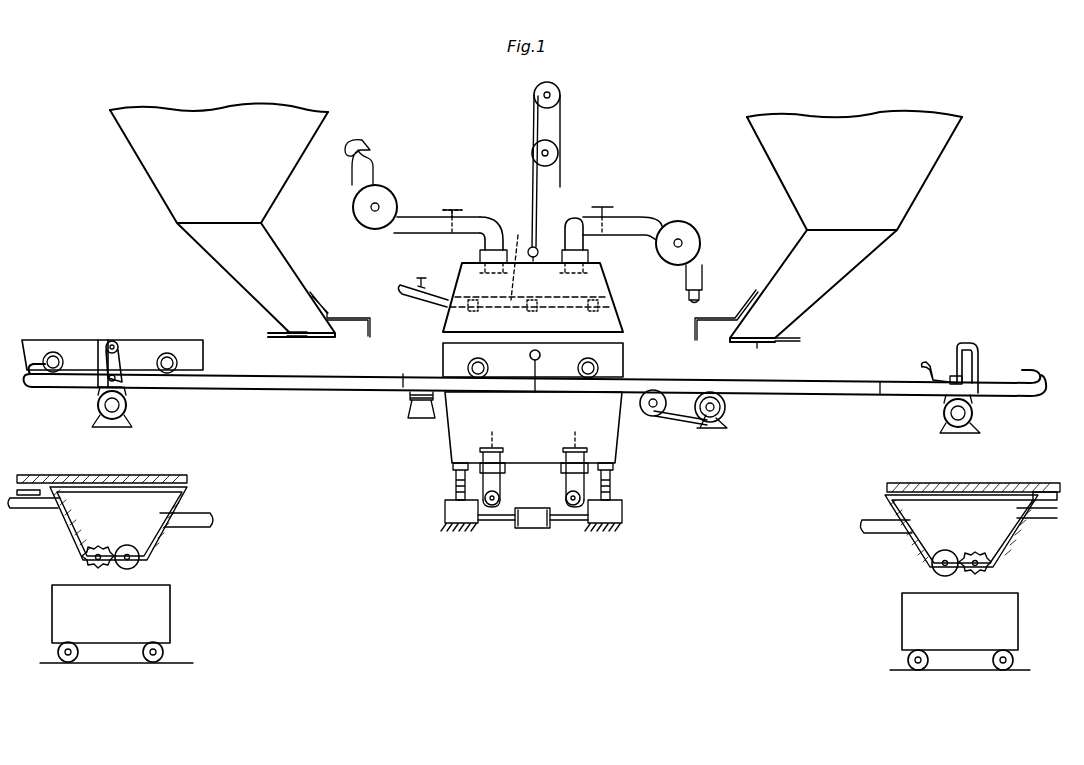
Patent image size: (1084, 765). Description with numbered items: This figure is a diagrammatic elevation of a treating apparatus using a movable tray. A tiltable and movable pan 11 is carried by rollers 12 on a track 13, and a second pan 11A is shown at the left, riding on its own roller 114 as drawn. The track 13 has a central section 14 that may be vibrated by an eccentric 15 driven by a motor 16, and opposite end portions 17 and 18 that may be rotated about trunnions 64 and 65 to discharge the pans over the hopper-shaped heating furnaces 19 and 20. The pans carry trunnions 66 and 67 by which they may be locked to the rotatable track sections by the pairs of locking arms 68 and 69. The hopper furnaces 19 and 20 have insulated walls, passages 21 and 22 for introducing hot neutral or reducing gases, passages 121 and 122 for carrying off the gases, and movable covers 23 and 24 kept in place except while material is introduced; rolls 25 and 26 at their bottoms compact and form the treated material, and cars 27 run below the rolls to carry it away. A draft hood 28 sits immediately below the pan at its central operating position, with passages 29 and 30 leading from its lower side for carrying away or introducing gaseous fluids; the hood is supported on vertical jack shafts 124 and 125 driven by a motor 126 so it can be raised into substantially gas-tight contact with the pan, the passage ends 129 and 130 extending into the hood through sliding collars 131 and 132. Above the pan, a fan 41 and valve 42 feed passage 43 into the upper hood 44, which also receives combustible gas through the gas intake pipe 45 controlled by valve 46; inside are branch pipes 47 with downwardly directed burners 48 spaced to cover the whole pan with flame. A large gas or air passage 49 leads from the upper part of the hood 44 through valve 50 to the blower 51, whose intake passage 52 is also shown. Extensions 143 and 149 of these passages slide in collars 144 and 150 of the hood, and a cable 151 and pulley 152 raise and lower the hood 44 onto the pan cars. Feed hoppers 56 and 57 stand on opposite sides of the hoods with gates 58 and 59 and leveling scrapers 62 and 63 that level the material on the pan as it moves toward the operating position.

The tiltable and movable pan 11 is at (624, 351).
The second pan 11A is at (117, 340).
The rollers 12 is at (466, 365).
The track 13 is at (342, 383).
The central section 14 is at (636, 395).
The eccentric 15 is at (670, 422).
The motor 16 is at (727, 411).
The end portion of track 17 is at (172, 384).
The end portion of track 18 is at (890, 388).
The hopper-shaped heating furnace 19 is at (180, 490).
The hopper-shaped heating furnace 20 is at (993, 528).
The passage 21 is at (205, 527).
The passage 22 is at (875, 520).
The movable cover 23 is at (98, 473).
The movable cover 24 is at (980, 481).
The roll 25 is at (138, 562).
The roll 26 is at (86, 562).
The car 27 is at (160, 607).
The draft hood 28 is at (446, 431).
The passage 29 is at (487, 488).
The passage 30 is at (573, 505).
The fan 41 is at (690, 226).
The valve 42 is at (603, 205).
The passage 43 is at (570, 230).
The upper hood 44 is at (608, 297).
The gas intake pipe 45 is at (424, 283).
The valve 46 is at (414, 283).
The branch pipes 47 is at (521, 258).
The burners 48 is at (520, 318).
The gas or air passage 49 is at (490, 222).
The valve 50 is at (445, 207).
The blower 51 is at (355, 199).
The intake passage 52 is at (352, 143).
The feed hopper 56 is at (917, 176).
The feed hopper 57 is at (150, 165).
The gate 58 is at (757, 343).
The gate 59 is at (305, 337).
The leveling scraper 62 is at (705, 318).
The leveling scraper 63 is at (368, 316).
The trunnion 64 is at (97, 404).
The trunnion 65 is at (973, 413).
The trunnion 66 is at (536, 392).
The trunnion 67 is at (114, 342).
The locking arms 68 is at (100, 345).
The locking arms 69 is at (975, 350).
The roller 114 is at (72, 344).
The passage 121 is at (20, 510).
The passage 122 is at (1040, 512).
The vertical jack shaft 124 is at (453, 485).
The vertical jack shaft 125 is at (612, 485).
The motor 126 is at (530, 530).
The end of passage 129 is at (495, 456).
The end of passage 130 is at (579, 456).
The collar 131 is at (505, 468).
The collar 132 is at (533, 493).
The extension of passage 143 is at (605, 275).
The collar 144 is at (478, 252).
The extension of passage 149 is at (466, 272).
The collar 150 is at (588, 254).
The cable 151 is at (533, 180).
The pulley 152 is at (560, 95).